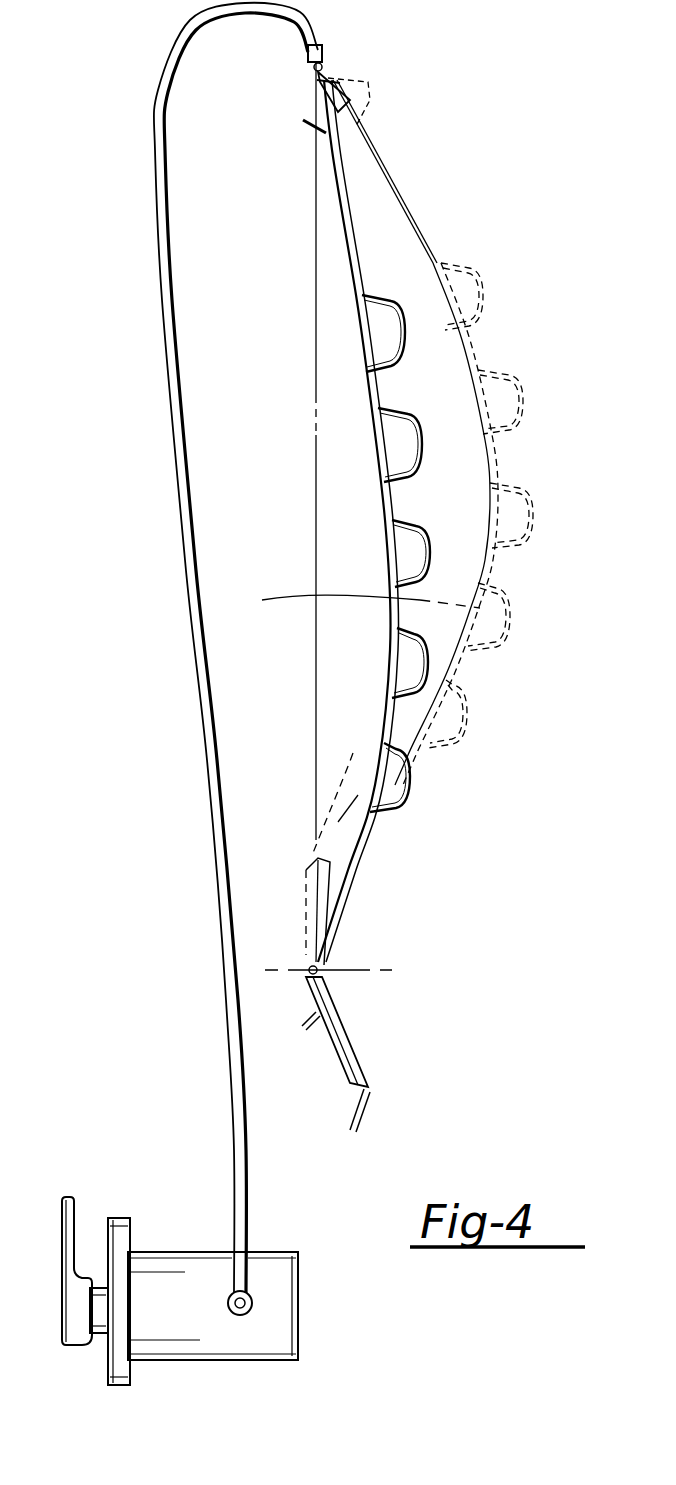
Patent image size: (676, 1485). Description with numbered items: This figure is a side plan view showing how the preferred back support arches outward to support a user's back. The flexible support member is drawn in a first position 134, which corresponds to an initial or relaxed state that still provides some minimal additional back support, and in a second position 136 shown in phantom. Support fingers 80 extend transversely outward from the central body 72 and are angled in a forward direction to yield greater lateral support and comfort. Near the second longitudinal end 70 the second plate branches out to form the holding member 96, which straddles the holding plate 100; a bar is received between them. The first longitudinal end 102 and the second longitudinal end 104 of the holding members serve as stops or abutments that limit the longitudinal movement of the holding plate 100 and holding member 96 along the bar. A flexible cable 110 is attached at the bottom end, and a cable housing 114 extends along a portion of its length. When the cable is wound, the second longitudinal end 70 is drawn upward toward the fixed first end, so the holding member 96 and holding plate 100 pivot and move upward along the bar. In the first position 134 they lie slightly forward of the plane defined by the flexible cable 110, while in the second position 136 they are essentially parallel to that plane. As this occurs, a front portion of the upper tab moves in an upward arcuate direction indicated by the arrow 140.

The cable housing 114 is at (190, 620).
The arrow 140 is at (298, 96).
The first position 134 is at (450, 521).
The second position 136 is at (455, 250).
The support fingers 80 is at (420, 433).
The central body 72 is at (405, 500).
The flexible cable 110 is at (480, 608).
The first longitudinal end 102 is at (353, 753).
The holding plate 100 is at (347, 1013).
The second longitudinal end 70 is at (372, 1045).
The second longitudinal end 104 is at (370, 1083).
The holding member 96 is at (340, 1077).